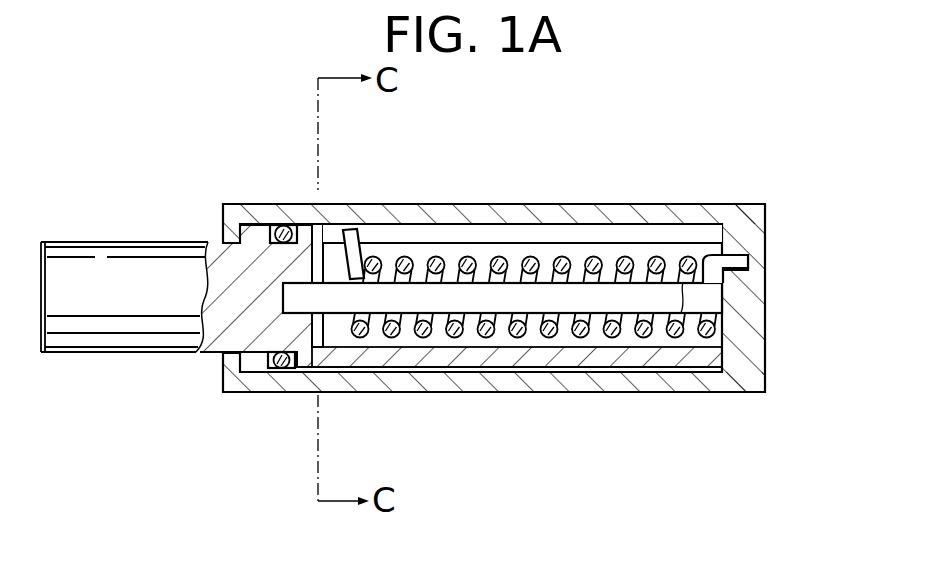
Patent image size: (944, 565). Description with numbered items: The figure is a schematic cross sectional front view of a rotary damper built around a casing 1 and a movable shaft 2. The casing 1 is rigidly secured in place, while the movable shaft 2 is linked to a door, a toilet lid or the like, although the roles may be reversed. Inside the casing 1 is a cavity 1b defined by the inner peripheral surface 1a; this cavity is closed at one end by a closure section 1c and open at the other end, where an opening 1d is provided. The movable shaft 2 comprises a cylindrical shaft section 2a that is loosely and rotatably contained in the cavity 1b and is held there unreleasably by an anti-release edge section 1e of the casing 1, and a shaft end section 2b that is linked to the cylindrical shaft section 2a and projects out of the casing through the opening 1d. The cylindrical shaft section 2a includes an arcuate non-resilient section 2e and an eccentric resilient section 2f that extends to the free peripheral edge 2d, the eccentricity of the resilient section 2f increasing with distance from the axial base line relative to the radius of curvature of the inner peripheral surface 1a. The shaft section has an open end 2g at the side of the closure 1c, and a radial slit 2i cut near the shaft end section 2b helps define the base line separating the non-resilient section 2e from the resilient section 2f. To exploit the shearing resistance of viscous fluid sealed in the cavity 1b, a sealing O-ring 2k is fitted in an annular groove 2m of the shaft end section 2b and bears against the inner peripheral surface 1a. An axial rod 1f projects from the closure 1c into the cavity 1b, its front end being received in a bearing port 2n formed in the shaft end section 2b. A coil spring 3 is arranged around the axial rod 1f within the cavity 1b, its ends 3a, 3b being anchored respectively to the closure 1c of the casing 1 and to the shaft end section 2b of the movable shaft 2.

The casing 1 is at (492, 259).
The inner peripheral surface 1a is at (678, 226).
The cavity 1b is at (457, 248).
The closure section 1c is at (760, 356).
The opening 1d is at (232, 352).
The anti-release edge section 1e is at (230, 238).
The axial rod 1f is at (478, 302).
The movable shaft 2 is at (435, 277).
The cylindrical shaft section 2a is at (568, 376).
The shaft end section 2b is at (93, 268).
The free peripheral edge 2d is at (700, 232).
The arcuate non-resilient section 2e is at (663, 357).
The eccentric resilient section 2f is at (632, 222).
The open end 2g is at (713, 341).
The radial slit 2i is at (315, 224).
The sealing O-ring 2k is at (283, 224).
The annular groove 2m is at (263, 353).
The bearing port 2n is at (292, 291).
The coil spring 3 is at (593, 232).
The spring end 3a is at (742, 262).
The spring end 3b is at (349, 229).